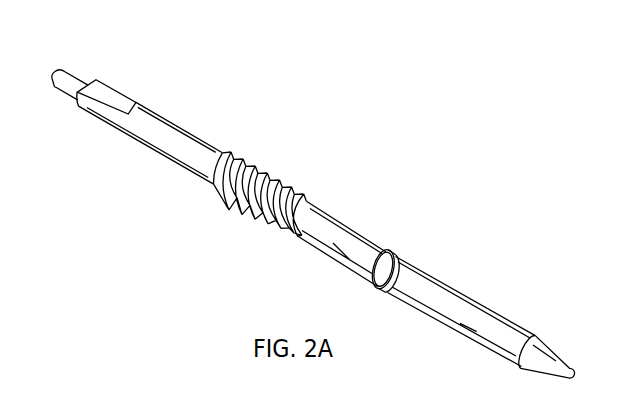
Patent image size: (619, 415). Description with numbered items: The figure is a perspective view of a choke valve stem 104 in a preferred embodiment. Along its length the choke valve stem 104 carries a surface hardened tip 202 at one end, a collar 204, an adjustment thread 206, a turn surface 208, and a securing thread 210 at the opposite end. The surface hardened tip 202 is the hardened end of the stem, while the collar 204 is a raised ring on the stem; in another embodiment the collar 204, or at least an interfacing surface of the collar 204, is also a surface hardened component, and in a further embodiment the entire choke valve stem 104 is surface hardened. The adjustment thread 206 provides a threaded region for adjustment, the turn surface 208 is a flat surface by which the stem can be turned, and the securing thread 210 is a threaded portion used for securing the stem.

The choke valve stem 104 is at (312, 156).
The surface hardened tip 202 is at (550, 340).
The collar 204 is at (400, 249).
The adjustment thread 206 is at (218, 202).
The turn surface 208 is at (115, 91).
The securing thread 210 is at (70, 70).